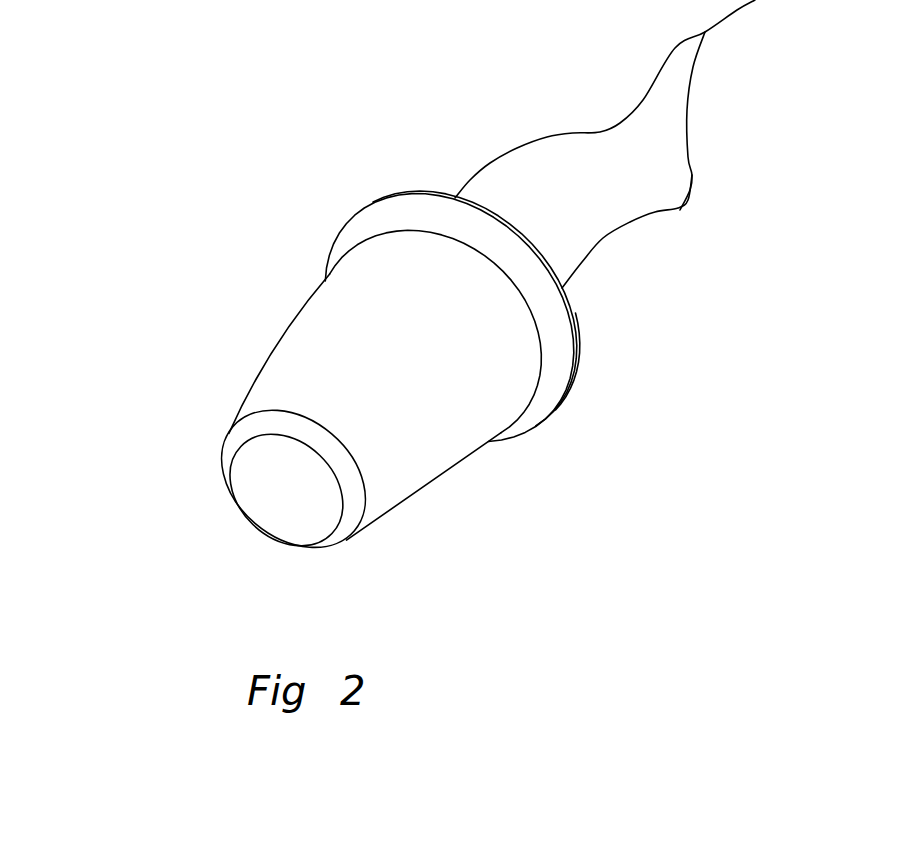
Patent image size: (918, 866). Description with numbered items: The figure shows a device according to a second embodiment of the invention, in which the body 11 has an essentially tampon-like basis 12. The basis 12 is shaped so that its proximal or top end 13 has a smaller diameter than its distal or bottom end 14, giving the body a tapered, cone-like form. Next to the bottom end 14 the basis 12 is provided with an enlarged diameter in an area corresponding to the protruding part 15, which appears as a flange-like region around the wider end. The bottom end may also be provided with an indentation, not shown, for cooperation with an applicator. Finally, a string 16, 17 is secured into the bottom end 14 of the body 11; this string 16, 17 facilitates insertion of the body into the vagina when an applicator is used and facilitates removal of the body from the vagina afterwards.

The body 11 is at (254, 302).
The tampon-like basis 12 is at (423, 457).
The proximal or top end 13 is at (282, 500).
The distal or bottom end 14 is at (572, 310).
The protruding part 15 is at (550, 385).
The string 16 is at (643, 218).
The string 17 is at (710, 37).